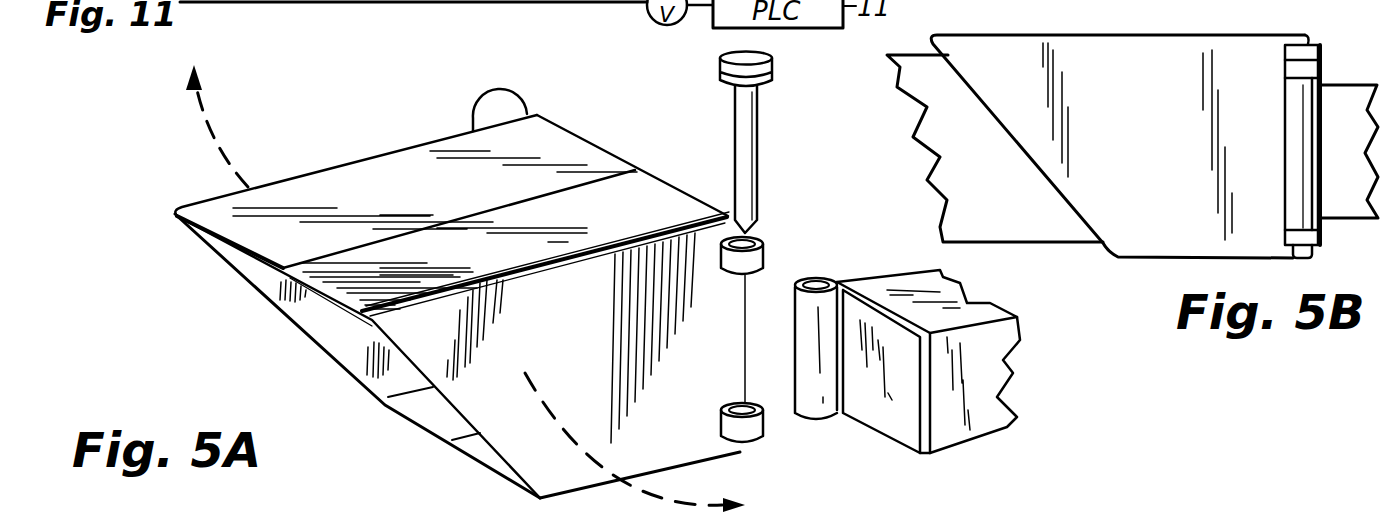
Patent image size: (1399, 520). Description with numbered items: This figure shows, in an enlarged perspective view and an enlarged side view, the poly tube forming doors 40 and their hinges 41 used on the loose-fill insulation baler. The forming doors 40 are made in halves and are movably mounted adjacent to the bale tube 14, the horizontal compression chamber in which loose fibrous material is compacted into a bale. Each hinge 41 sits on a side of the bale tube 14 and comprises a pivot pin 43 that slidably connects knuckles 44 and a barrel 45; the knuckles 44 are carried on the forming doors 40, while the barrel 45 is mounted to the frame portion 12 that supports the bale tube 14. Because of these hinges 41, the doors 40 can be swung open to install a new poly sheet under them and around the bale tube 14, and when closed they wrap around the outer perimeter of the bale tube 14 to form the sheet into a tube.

In FIG. 5A, the frame portion 12 is at (990, 373).
In FIG. 5B, the frame portion 12 is at (1352, 161).
In FIG. 5B, the bale tube 14 is at (1040, 228).
In FIG. 5A, the poly tube forming doors 40 is at (317, 317).
In FIG. 5B, the poly tube forming doors 40 is at (1173, 50).
In FIG. 5A, the hinge 41 is at (824, 194).
In FIG. 5B, the hinge 41 is at (1330, 128).
In FIG. 5A, the pivot pin 43 is at (495, 108).
In FIG. 5B, the pivot pin 43 is at (1320, 47).
In FIG. 5A, the knuckles 44 is at (763, 252).
In FIG. 5B, the knuckles 44 is at (1294, 68).
In FIG. 5A, the barrel 45 is at (822, 321).
In FIG. 5B, the barrel 45 is at (1295, 105).